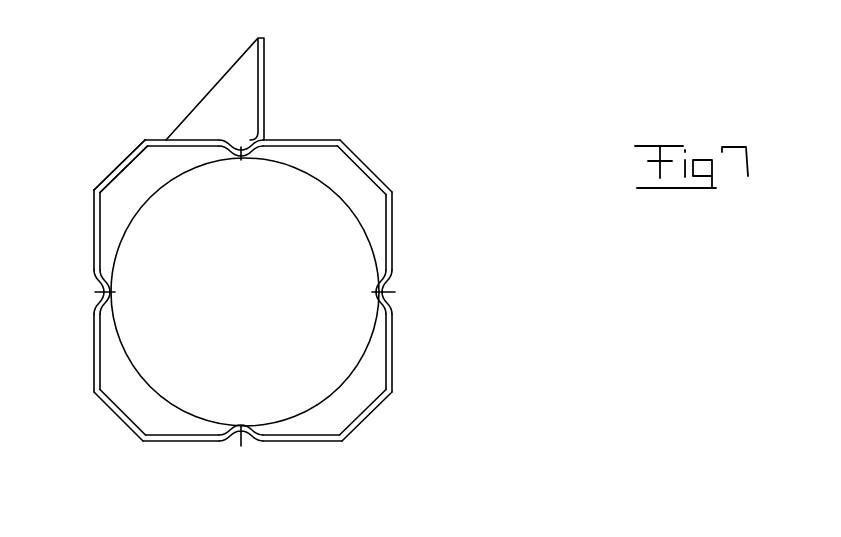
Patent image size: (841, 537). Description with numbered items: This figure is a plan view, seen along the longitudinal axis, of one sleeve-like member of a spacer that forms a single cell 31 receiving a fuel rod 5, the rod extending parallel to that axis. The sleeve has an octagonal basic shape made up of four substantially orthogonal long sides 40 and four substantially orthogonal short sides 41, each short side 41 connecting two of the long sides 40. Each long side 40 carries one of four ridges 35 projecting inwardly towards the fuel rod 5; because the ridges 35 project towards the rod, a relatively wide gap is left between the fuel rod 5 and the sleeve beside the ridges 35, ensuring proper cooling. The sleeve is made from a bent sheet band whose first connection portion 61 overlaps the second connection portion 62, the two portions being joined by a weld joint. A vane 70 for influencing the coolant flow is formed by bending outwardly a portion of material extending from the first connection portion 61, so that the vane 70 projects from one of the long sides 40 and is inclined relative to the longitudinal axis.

The fuel rod 5 is at (360, 218).
The cell 31 is at (352, 424).
The ridge 35 is at (242, 158).
The long side 40 is at (318, 141).
The short side 41 is at (97, 188).
The first connection portion 61 is at (115, 165).
The second connection portion 62 is at (130, 167).
The vane 70 is at (205, 100).